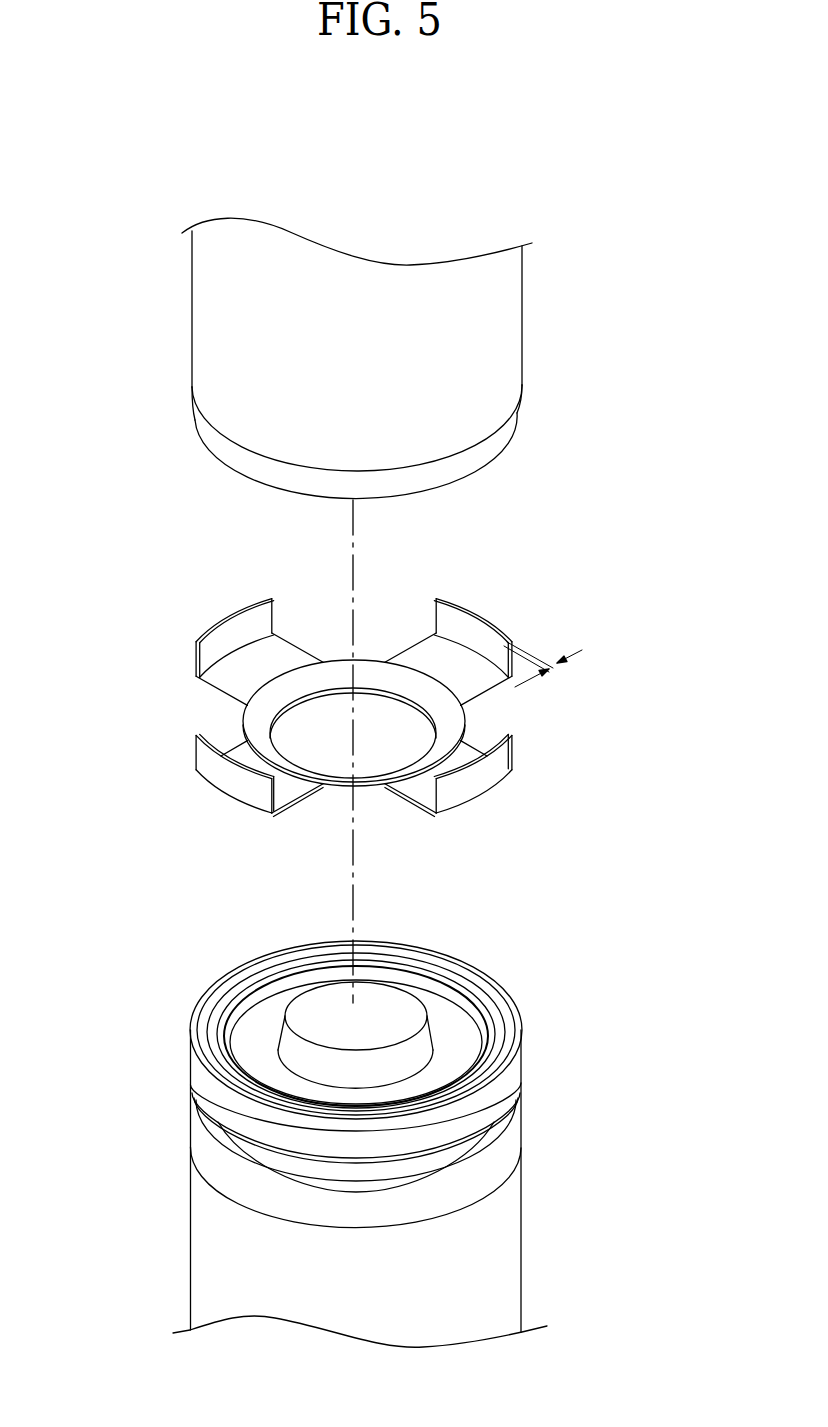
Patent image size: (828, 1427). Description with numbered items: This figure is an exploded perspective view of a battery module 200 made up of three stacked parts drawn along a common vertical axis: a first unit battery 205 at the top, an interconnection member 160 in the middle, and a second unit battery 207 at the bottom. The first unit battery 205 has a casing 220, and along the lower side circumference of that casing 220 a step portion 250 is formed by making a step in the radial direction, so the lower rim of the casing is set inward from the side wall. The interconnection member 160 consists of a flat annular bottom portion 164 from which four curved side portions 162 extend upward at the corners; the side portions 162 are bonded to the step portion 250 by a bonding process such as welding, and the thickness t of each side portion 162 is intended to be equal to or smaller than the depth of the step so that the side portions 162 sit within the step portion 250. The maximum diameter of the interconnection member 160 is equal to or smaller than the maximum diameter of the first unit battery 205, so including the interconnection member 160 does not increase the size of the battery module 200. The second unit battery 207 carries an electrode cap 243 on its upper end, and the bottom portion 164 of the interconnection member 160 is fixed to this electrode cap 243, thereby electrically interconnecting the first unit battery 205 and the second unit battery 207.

The battery module 200 is at (372, 143).
The first unit battery 205 is at (525, 306).
The casing 220 is at (207, 320).
The step portion 250 is at (245, 465).
The interconnection member 160 is at (524, 757).
The side portion 162 is at (483, 630).
The bottom portion 164 is at (258, 728).
The second unit battery 207 is at (524, 1233).
The electrode cap 243 is at (417, 1012).